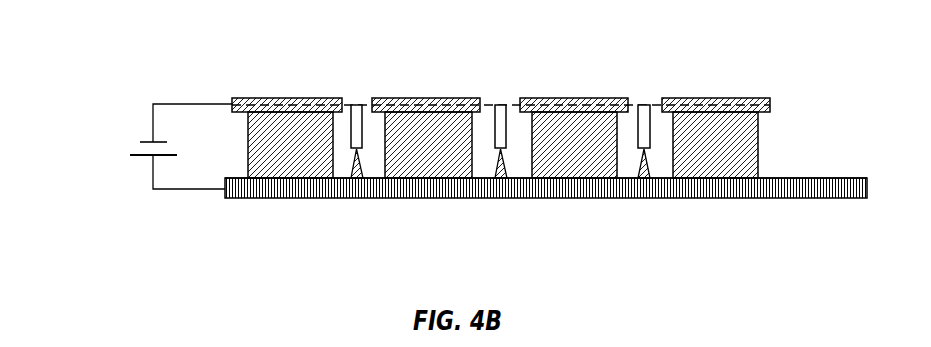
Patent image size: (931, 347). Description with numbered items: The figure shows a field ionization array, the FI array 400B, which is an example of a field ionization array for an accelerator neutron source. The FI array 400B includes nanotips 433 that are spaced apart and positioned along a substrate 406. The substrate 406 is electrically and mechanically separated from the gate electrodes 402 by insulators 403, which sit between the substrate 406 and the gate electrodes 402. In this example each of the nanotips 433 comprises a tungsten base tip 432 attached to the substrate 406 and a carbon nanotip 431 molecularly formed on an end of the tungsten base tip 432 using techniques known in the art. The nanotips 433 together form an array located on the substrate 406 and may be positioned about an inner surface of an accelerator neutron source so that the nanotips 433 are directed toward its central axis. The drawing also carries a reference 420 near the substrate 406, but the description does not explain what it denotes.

The FI array 400B is at (146, 60).
The gate electrodes 402 is at (288, 97).
The insulators 403 is at (265, 165).
The substrate 406 is at (787, 192).
The substrate top surface layer 420 is at (343, 180).
The carbon nanotip 431 is at (357, 105).
The tungsten base tip 432 is at (355, 164).
The nanotips 433 is at (514, 90).